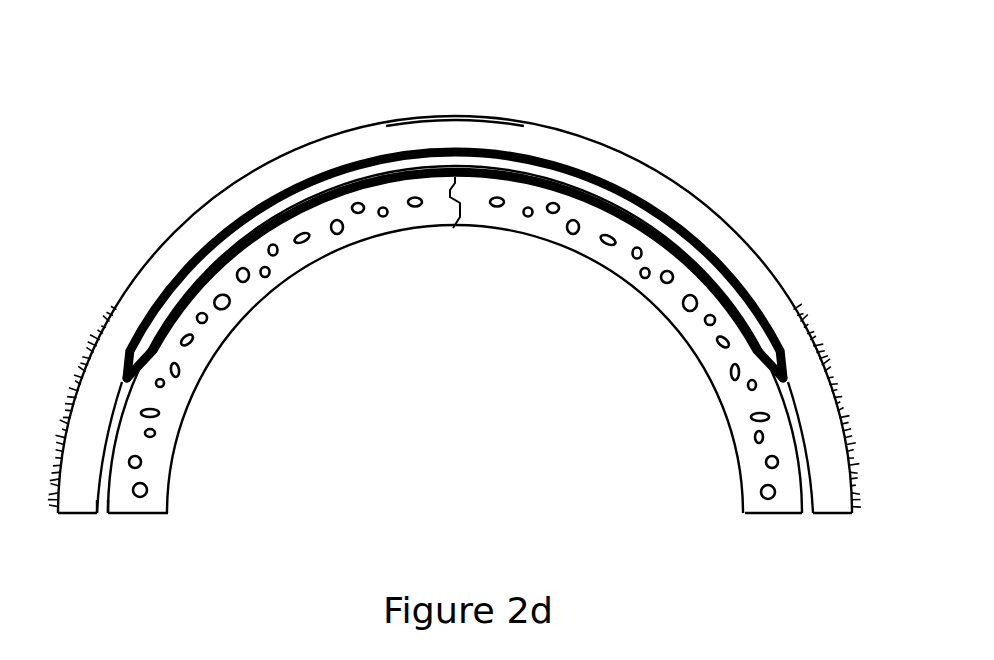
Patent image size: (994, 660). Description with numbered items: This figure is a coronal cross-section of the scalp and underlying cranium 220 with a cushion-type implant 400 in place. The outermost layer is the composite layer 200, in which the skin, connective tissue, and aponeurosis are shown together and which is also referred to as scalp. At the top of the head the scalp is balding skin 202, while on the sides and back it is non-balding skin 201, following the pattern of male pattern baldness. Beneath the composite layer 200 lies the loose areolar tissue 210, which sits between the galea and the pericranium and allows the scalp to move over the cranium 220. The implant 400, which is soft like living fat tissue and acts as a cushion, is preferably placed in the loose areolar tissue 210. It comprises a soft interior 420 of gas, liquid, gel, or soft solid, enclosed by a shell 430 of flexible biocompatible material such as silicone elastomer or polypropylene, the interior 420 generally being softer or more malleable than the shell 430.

The composite layer 200 is at (312, 160).
The non-balding skin 201 is at (837, 403).
The balding skin 202 is at (455, 119).
The loose areolar tissue 210 is at (103, 512).
The cranium 220 is at (318, 243).
The cushion-type implant 400 is at (422, 221).
The interior 420 is at (585, 183).
The shell 430 is at (708, 242).